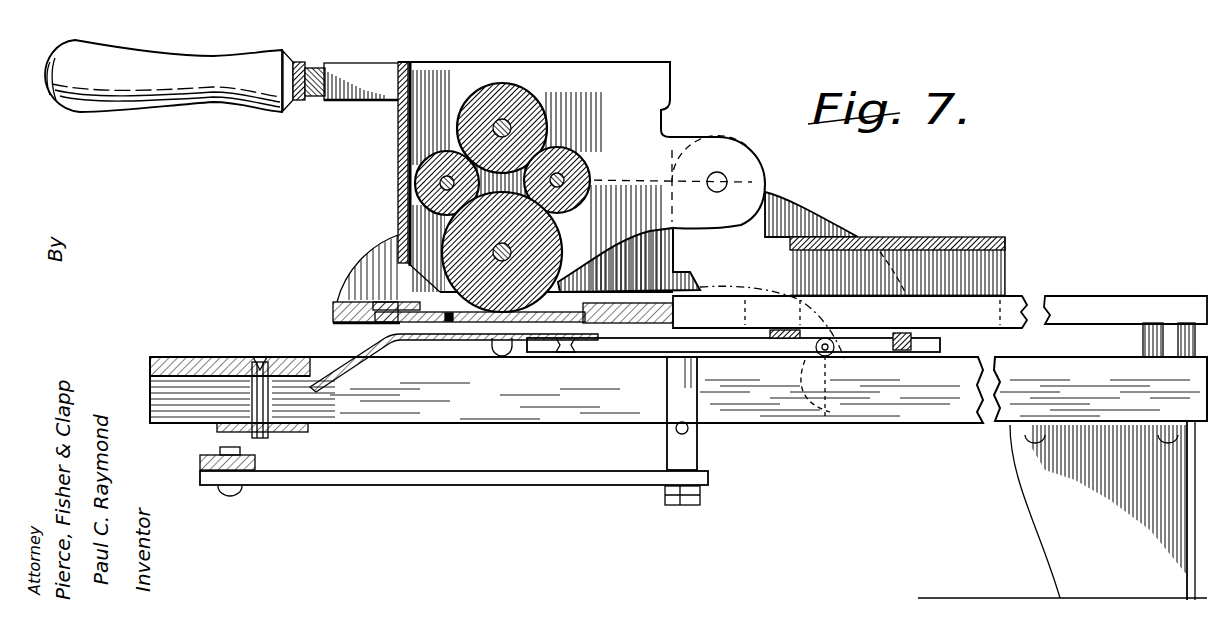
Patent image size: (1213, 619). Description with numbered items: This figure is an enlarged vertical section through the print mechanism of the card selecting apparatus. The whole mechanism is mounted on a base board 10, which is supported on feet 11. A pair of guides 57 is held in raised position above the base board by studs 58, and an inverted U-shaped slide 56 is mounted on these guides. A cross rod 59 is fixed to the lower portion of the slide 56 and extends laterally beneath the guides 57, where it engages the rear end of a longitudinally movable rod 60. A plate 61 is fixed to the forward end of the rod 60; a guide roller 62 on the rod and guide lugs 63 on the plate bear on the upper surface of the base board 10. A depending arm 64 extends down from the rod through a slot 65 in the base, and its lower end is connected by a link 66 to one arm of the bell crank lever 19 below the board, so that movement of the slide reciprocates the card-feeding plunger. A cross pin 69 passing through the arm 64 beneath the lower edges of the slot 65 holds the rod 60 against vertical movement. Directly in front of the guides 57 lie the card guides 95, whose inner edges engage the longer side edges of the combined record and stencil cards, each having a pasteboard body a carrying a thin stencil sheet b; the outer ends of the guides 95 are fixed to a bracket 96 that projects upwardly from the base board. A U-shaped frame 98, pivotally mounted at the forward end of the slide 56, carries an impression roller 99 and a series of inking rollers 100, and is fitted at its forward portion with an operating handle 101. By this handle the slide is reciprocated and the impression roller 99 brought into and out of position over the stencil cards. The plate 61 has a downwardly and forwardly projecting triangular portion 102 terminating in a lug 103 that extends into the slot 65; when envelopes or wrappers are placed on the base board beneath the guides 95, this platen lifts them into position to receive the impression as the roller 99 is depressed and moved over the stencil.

The base board 10 is at (453, 416).
The feet 11 is at (1033, 498).
The bell crank lever 19 is at (256, 463).
The slide 56 is at (905, 242).
The guides 57 is at (1042, 295).
The studs 58 is at (772, 334).
The cross rod 59 is at (906, 333).
The longitudinally movable rod 60 is at (638, 343).
The plate 61 is at (456, 340).
The guide roller 62 is at (828, 338).
The guide lugs 63 is at (494, 350).
The depending arm 64 is at (705, 458).
The slot 65 is at (805, 418).
The link 66 is at (450, 474).
The cross pin 69 is at (677, 430).
The card guides 95 is at (337, 312).
The bracket 96 is at (778, 207).
The U-shaped frame 98 is at (457, 68).
The impression roller 99 is at (556, 243).
The inking rollers 100 is at (566, 152).
The operating handle 101 is at (180, 64).
The triangular portion 102 is at (372, 350).
The lug 103 is at (320, 386).
The body of the card a is at (400, 322).
The stencil sheet b is at (557, 297).